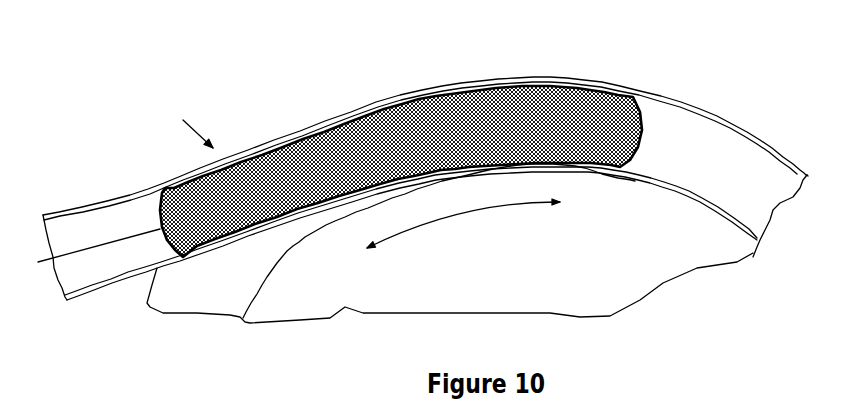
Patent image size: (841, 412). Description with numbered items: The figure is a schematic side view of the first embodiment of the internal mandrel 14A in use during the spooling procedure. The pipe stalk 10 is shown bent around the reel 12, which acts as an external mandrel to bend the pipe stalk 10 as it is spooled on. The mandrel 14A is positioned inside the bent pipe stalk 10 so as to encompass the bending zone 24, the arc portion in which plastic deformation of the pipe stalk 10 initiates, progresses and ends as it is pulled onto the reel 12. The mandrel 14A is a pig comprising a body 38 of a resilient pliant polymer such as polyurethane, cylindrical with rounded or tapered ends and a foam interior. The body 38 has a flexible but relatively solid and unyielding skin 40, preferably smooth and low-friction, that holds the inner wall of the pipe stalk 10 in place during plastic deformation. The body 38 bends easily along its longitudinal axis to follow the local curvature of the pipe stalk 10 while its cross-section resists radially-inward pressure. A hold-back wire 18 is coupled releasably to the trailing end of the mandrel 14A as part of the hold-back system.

The pipe stalk 10 is at (695, 112).
The reel 12 is at (650, 257).
The mandrel 14A is at (177, 119).
The hold-back wire 18 is at (107, 243).
The bending zone 24 is at (502, 207).
The body 38 is at (485, 112).
The skin 40 is at (605, 85).